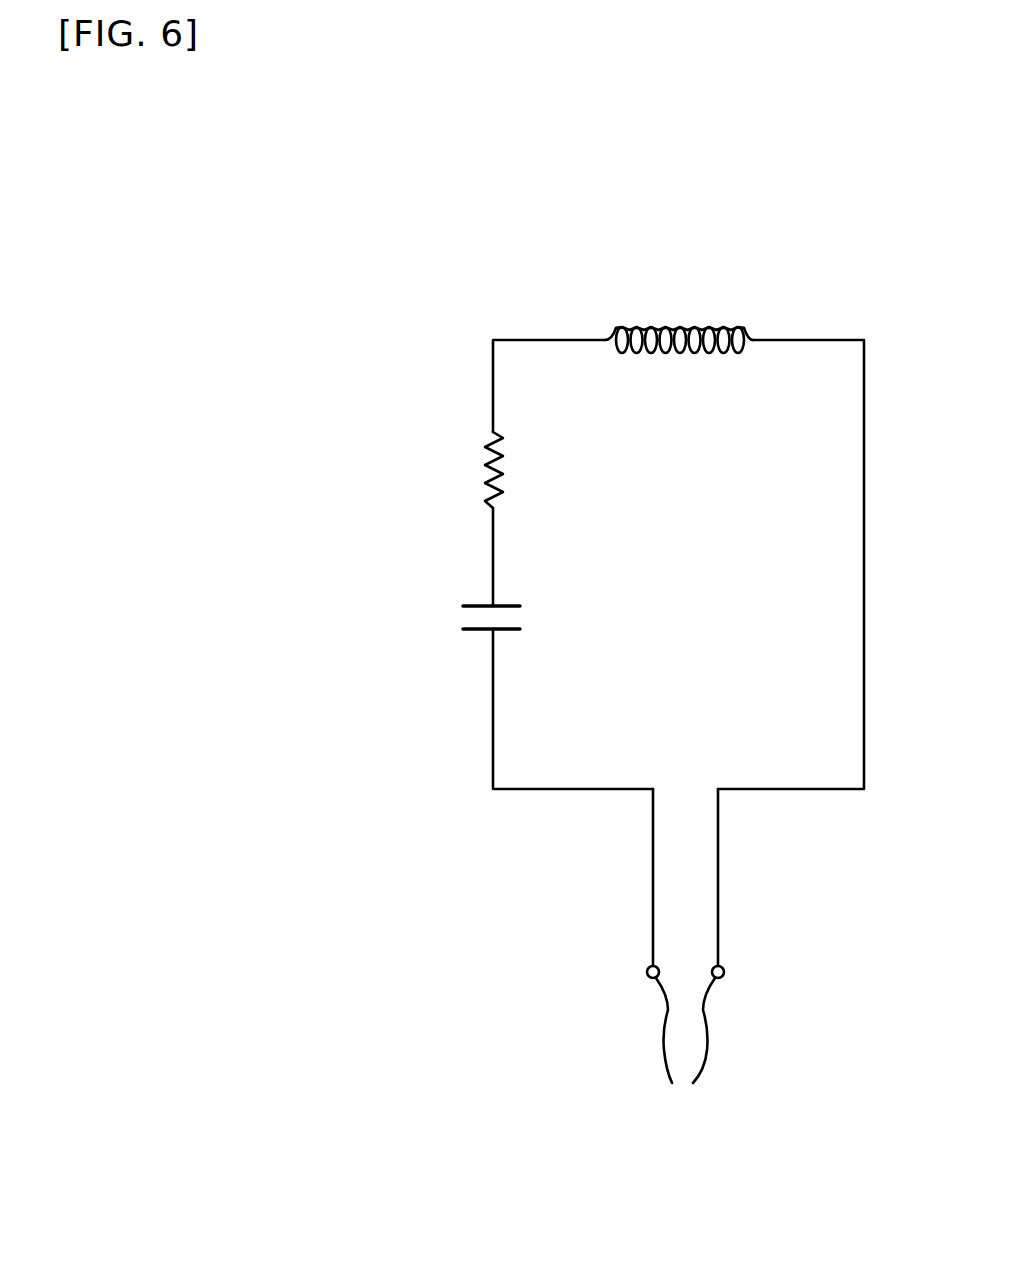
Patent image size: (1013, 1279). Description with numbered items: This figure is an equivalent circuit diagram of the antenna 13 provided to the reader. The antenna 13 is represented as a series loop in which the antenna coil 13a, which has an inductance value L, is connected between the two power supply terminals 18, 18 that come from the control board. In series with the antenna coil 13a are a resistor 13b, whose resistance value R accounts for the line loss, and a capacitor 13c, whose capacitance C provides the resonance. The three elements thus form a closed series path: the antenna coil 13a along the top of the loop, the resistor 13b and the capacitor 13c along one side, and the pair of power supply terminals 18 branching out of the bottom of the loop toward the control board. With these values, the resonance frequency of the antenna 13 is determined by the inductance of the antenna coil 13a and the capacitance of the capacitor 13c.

The antenna 13 is at (413, 358).
The antenna coil 13a is at (722, 328).
The resistor 13b is at (508, 472).
The capacitor 13c is at (520, 621).
The power supply terminals 18 is at (685, 959).